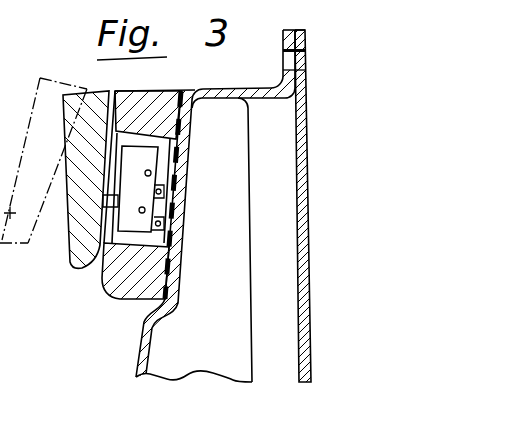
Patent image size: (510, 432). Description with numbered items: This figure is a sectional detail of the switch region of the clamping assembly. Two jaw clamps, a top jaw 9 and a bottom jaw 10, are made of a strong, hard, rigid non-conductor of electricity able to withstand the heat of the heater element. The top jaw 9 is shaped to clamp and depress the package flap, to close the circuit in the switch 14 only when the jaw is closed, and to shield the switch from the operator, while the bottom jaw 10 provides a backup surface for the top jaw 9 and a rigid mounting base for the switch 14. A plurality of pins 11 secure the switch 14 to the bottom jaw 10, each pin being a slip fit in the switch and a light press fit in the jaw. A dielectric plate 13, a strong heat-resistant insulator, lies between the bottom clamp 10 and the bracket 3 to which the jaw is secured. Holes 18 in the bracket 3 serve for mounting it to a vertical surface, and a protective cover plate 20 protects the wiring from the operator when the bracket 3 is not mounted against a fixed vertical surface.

The bracket 3 is at (267, 90).
The top jaw clamp 9 is at (70, 251).
The bottom jaw clamp 10 is at (110, 285).
The pins 11 is at (145, 173).
The dielectric plate 13 is at (184, 92).
The switch 14 is at (148, 182).
The holes 18 is at (290, 58).
The protective cover plate 20 is at (302, 170).